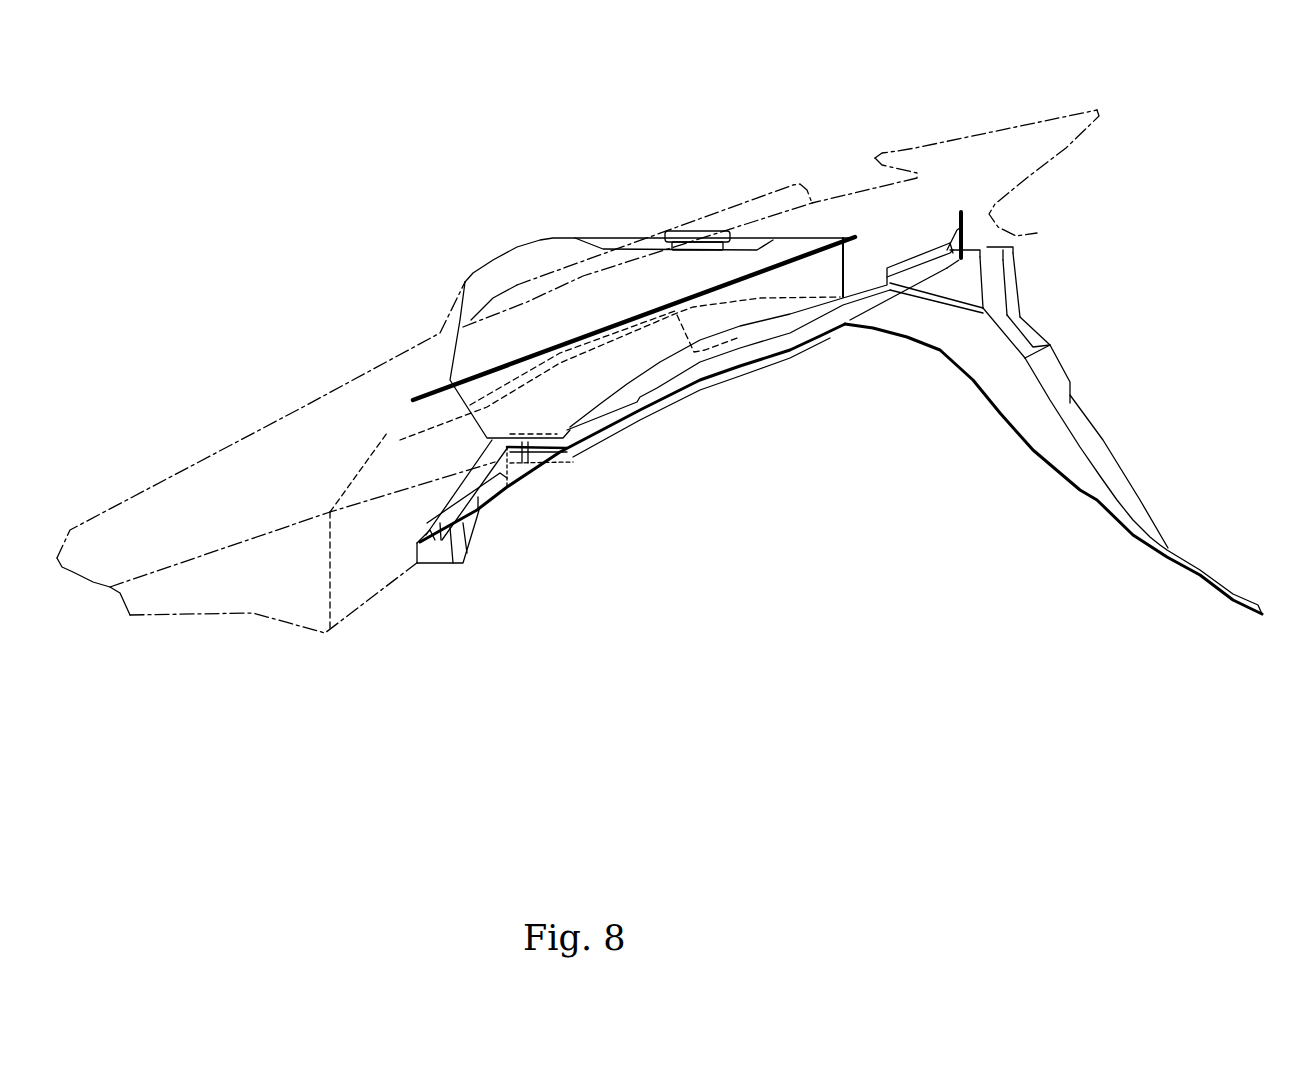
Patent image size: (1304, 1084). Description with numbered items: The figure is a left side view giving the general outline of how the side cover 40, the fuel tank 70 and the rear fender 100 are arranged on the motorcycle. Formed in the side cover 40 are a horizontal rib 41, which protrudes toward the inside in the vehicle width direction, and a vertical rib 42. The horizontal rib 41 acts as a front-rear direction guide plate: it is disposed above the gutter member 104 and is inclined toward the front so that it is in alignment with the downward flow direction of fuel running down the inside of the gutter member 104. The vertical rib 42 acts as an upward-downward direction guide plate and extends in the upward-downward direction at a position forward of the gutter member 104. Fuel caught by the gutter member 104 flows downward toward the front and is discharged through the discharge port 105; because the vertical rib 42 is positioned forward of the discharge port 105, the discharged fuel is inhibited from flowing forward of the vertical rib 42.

The side cover 40 is at (1003, 127).
The horizontal rib 41 is at (428, 415).
The vertical rib 42 is at (365, 455).
The fuel tank 70 is at (577, 238).
The rear fender 100 is at (1112, 477).
The gutter member 104 is at (723, 360).
The discharge port 105 is at (442, 540).